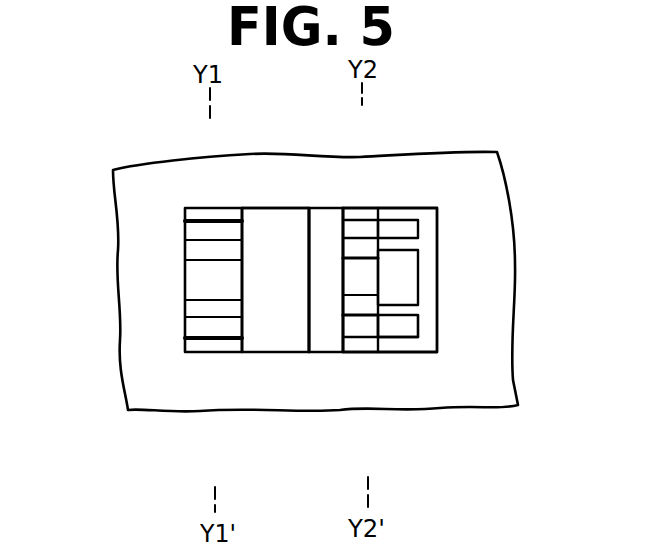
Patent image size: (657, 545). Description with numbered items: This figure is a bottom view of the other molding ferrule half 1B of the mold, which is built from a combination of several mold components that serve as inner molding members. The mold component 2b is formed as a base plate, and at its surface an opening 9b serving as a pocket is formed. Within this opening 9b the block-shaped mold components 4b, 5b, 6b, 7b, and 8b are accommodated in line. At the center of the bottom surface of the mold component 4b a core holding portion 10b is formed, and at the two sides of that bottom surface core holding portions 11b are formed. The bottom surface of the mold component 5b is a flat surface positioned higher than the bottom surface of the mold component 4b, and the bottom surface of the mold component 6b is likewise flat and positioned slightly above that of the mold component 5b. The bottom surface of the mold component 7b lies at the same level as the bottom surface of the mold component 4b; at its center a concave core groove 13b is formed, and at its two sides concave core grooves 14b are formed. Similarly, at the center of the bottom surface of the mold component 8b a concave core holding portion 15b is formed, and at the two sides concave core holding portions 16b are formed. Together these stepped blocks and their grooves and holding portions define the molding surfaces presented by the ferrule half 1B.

The molding ferrule half 1B is at (524, 265).
The mold component (base plate) 2b is at (488, 305).
The mold component (block) 4b is at (201, 352).
The mold component (block) 5b is at (263, 352).
The mold component (block) 6b is at (335, 352).
The mold component (block) 7b is at (362, 352).
The mold component (block) 8b is at (420, 352).
The opening 9b is at (270, 214).
The core holding portion 10b is at (197, 289).
The core holding portion 11b is at (194, 236).
The concave core groove 13b is at (357, 278).
The concave core groove 14b is at (361, 227).
The concave core holding portion 15b is at (405, 268).
The concave core holding portion 16b is at (406, 225).